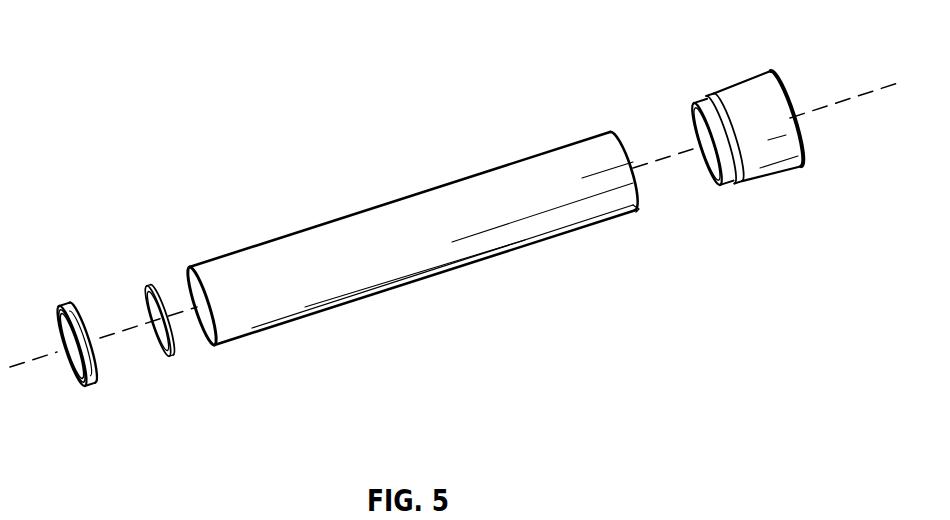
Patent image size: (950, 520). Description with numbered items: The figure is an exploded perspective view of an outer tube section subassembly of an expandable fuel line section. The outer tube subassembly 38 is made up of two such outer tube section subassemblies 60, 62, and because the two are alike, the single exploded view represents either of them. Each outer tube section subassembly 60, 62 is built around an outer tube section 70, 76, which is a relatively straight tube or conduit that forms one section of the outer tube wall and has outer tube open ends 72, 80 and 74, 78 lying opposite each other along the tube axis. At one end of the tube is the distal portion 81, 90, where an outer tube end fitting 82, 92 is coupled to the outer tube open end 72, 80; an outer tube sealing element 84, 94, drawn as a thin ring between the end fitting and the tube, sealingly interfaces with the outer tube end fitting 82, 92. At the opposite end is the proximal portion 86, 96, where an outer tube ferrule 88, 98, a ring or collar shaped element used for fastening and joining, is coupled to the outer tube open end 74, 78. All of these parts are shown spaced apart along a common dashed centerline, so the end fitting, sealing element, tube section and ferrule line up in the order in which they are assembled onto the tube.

The outer tube subassembly 38 is at (520, 110).
The outer tube section subassembly 60 is at (400, 164).
The outer tube section subassembly 62 is at (323, 87).
The outer tube section 70 is at (413, 264).
The outer tube section 76 is at (282, 330).
The outer tube open end 72 is at (233, 300).
The outer tube open end 80 is at (208, 349).
The outer tube open end 74 is at (623, 187).
The outer tube open end 78 is at (639, 213).
The distal portion 81 is at (237, 260).
The distal portion 90 is at (205, 265).
The outer tube end fitting 82 is at (83, 316).
The outer tube end fitting 92 is at (82, 271).
The outer tube sealing element 84 is at (167, 281).
The outer tube sealing element 94 is at (148, 291).
The proximal portion 86 is at (615, 145).
The proximal portion 96 is at (596, 146).
The outer tube ferrule 88 is at (748, 106).
The outer tube ferrule 98 is at (727, 90).